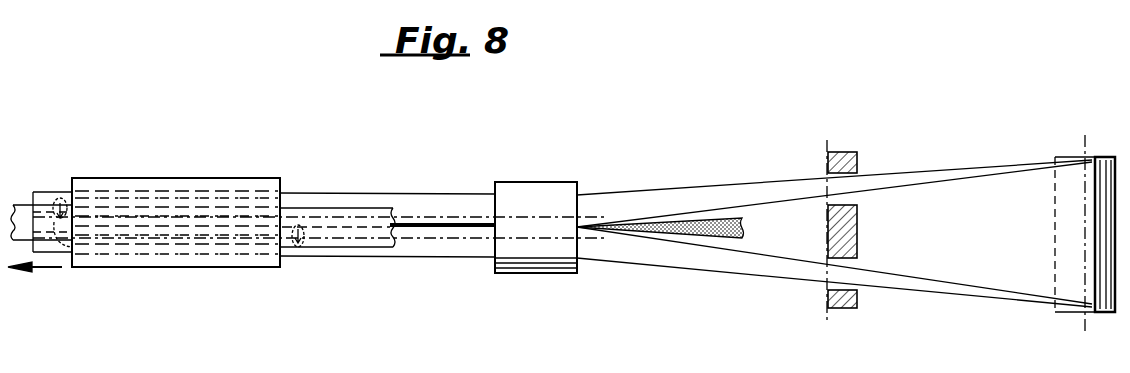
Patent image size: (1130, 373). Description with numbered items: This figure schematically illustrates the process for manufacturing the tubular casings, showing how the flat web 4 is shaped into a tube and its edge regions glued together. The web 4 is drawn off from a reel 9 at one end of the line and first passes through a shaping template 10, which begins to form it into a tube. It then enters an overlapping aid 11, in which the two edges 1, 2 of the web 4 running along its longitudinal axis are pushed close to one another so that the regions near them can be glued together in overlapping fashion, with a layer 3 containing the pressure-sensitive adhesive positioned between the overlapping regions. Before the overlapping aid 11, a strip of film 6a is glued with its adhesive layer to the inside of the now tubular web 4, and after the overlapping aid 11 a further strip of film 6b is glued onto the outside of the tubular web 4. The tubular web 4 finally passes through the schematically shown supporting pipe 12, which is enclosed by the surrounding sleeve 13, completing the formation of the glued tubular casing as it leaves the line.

The edge 1 is at (458, 223).
The edge 2 is at (470, 232).
The layer containing the pressure-sensitive adhesive 3 is at (430, 216).
The web 4 is at (55, 187).
The strip of film 6a is at (742, 229).
The further strip of film 6b is at (368, 210).
The reel 9 is at (1068, 320).
The shaping template 10 is at (840, 310).
The overlapping aid 11 is at (538, 186).
The supporting pipe 12 is at (298, 225).
The sleeve 13 is at (215, 185).